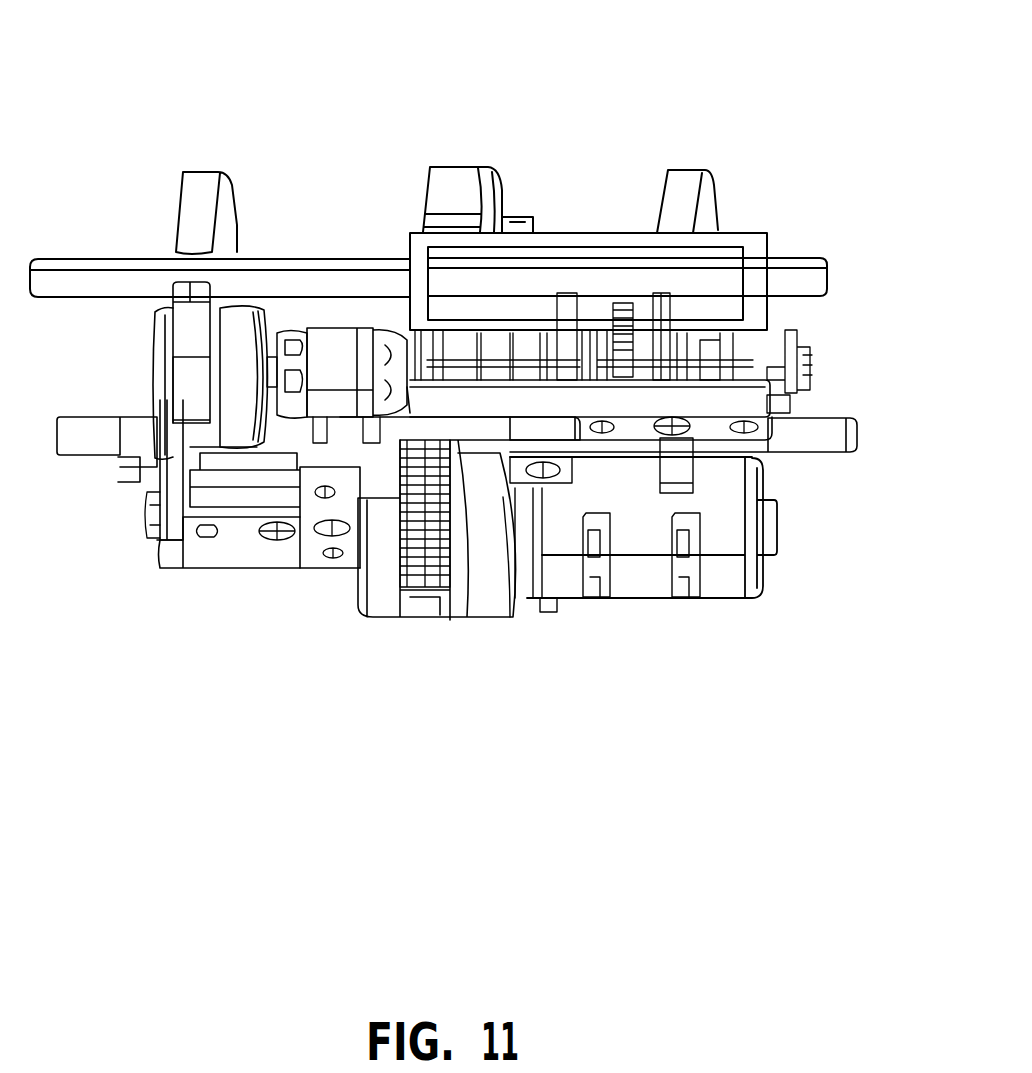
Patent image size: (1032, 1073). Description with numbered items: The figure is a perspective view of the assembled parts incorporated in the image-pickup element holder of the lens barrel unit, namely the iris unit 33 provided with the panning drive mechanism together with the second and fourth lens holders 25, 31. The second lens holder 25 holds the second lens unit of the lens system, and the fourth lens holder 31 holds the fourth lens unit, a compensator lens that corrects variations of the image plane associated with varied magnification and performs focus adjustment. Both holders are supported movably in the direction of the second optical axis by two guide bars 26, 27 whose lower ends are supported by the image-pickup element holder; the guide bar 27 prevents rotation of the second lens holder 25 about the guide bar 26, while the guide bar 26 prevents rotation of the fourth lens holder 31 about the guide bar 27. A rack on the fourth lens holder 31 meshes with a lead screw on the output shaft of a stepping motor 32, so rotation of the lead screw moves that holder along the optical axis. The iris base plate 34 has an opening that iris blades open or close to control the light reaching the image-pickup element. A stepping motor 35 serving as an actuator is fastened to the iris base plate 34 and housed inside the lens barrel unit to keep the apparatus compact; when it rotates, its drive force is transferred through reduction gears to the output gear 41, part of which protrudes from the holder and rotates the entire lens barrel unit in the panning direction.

The second lens holder 25 is at (192, 178).
The guide bar 26 is at (838, 435).
The guide bar 27 is at (793, 275).
The fourth lens holder 31 is at (675, 188).
The stepping motor 32 is at (323, 360).
The iris unit 33 is at (425, 630).
The iris base plate 34 is at (453, 183).
The stepping motor 35 is at (715, 567).
The output gear 41 is at (400, 547).